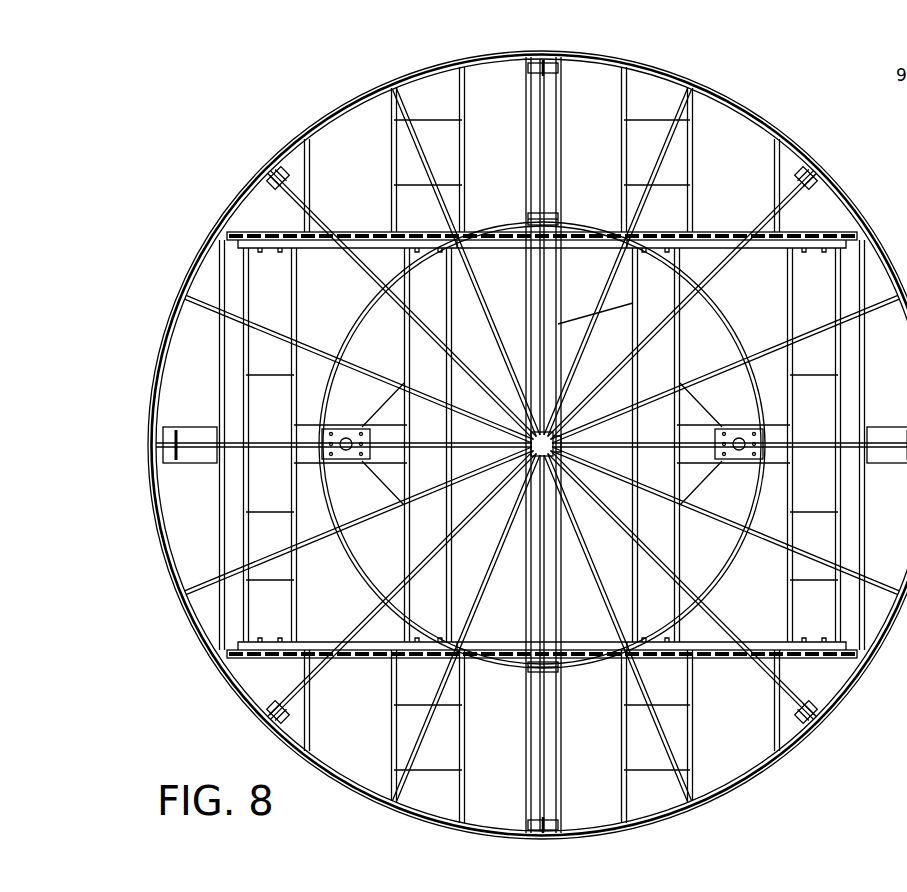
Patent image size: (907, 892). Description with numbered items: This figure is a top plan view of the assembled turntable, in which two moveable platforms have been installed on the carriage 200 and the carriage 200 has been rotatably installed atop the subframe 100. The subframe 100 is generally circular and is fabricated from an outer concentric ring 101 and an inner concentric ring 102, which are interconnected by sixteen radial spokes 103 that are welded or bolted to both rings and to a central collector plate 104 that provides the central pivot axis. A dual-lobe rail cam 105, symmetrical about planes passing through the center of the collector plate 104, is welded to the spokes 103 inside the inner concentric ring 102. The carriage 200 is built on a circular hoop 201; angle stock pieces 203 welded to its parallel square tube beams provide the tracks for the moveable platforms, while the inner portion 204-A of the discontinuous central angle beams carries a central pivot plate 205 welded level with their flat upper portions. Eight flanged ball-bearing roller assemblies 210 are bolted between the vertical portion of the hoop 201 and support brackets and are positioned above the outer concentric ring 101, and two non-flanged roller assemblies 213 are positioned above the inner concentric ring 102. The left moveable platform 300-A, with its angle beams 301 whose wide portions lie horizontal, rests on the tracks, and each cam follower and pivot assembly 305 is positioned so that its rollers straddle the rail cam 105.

The subframe 100 is at (503, 445).
The outer concentric ring 101 is at (166, 394).
The inner concentric ring 102 is at (350, 340).
The radial spoke 103 is at (300, 548).
The central collector plate 104 is at (532, 429).
The dual-lobe rail cam 105 is at (390, 489).
The carriage 200 is at (278, 150).
The circular hoop 201 is at (745, 785).
The angle stock piece 203 is at (473, 248).
The inner portion of central angle beam 204-A is at (528, 317).
The central pivot plate 205 is at (560, 442).
The flanged ball-bearing roller assembly 210 is at (267, 180).
The non-flanged ball-bearing roller assembly 213 is at (528, 221).
The left moveable platform 300-A is at (906, 322).
The angle beam 301 is at (311, 248).
The cam follower and pivot assembly 305 is at (340, 429).